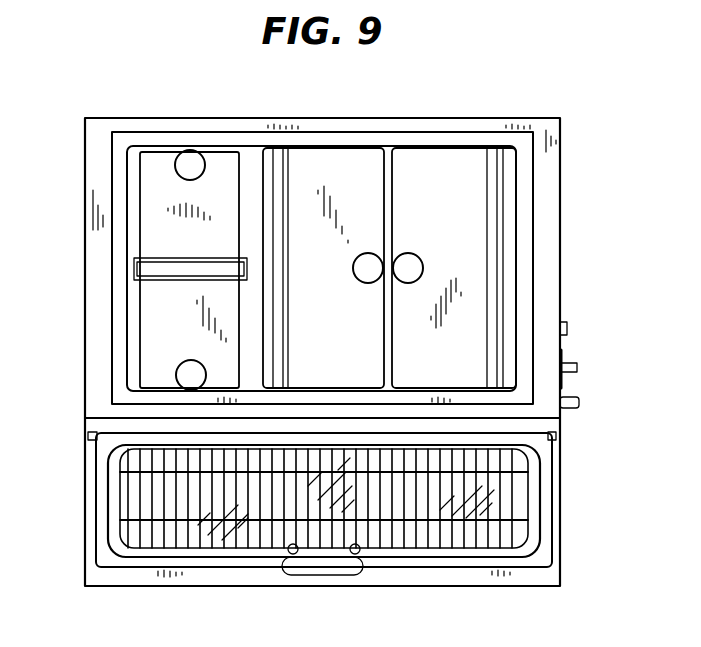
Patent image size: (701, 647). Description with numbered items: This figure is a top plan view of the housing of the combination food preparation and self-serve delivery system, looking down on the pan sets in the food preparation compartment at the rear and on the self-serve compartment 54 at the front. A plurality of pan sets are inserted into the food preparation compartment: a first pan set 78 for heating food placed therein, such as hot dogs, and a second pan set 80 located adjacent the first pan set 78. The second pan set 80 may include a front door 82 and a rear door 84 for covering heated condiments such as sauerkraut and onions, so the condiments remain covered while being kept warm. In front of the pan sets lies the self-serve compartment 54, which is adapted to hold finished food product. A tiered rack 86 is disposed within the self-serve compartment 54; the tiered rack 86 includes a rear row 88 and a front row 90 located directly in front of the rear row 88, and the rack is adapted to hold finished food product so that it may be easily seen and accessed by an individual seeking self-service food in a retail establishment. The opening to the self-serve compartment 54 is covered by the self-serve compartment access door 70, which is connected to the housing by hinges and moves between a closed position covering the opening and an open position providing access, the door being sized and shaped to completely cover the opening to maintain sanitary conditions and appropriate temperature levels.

The self-serve compartment access door 70 is at (540, 568).
The self-serve compartment 54 is at (122, 463).
The first pan set 78 is at (334, 153).
The second pan set 80 is at (138, 198).
The front door 82 is at (153, 317).
The rear door 84 is at (156, 157).
The tiered rack 86 is at (137, 528).
The rear row 88 is at (524, 462).
The front row 90 is at (525, 510).